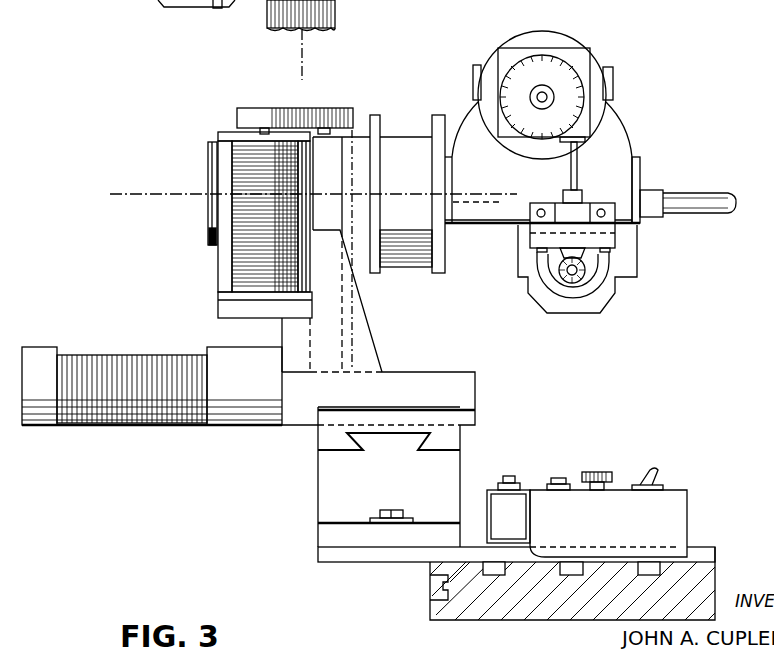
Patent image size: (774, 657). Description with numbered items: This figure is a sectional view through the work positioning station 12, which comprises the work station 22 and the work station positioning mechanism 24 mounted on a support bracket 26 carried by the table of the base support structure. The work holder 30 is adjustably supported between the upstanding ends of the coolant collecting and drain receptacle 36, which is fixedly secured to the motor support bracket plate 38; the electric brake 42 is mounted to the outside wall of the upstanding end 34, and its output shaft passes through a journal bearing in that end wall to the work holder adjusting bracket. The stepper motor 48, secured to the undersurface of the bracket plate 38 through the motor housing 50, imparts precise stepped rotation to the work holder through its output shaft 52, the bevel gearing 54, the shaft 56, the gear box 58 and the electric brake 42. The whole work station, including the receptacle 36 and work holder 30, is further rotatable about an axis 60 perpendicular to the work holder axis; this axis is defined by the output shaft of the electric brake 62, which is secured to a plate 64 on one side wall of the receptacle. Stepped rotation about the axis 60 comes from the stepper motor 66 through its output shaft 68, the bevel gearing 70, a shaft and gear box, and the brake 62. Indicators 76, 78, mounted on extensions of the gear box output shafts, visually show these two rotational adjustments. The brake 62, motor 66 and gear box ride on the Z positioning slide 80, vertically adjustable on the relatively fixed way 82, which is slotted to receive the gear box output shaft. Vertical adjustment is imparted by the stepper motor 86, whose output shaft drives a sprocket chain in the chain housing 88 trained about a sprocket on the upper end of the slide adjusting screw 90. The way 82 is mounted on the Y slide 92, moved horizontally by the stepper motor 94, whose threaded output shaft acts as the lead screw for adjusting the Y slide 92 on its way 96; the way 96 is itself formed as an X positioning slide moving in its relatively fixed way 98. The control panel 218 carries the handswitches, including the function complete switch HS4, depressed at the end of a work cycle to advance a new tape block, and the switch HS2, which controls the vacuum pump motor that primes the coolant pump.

The work positioning station 12 is at (240, 475).
The work station 22 is at (660, 95).
The work station positioning mechanism 24 is at (178, 150).
The support bracket 26 is at (372, 556).
The work holder 30 is at (473, 77).
The upstanding end 34 is at (617, 146).
The coolant collecting and drain receptacle 36 is at (640, 171).
The motor support bracket plate 38 is at (497, 230).
The electric brake 42 is at (558, 32).
The stepper motor 48 is at (575, 300).
The motor housing 50 is at (623, 230).
The output shaft 52 is at (593, 275).
The bevel gearing 54 is at (560, 282).
The shaft 56 is at (571, 183).
The gear box 58 is at (578, 60).
The axis 60 is at (305, 47).
The electric brake 62 is at (403, 250).
The plate 64 is at (436, 270).
The stepper motor 66 is at (183, 8).
The output shaft 68 is at (150, 4).
The bevel gearing 70 is at (218, 10).
The indicator 76 is at (196, 242).
The indicator 78 is at (526, 76).
The Z positioning slide 80 is at (366, 162).
The way 82 is at (326, 214).
The stepper motor 86 is at (258, 259).
The chain housing 88 is at (276, 108).
The slide adjusting screw 90 is at (333, 128).
The Y slide 92 is at (398, 395).
The stepper motor 94 is at (340, 10).
The way 96 is at (332, 433).
The way 98 is at (436, 476).
The control panel 218 is at (660, 520).
The function complete switch HS4 is at (598, 472).
The handswitch No. 2 HS2 is at (660, 476).